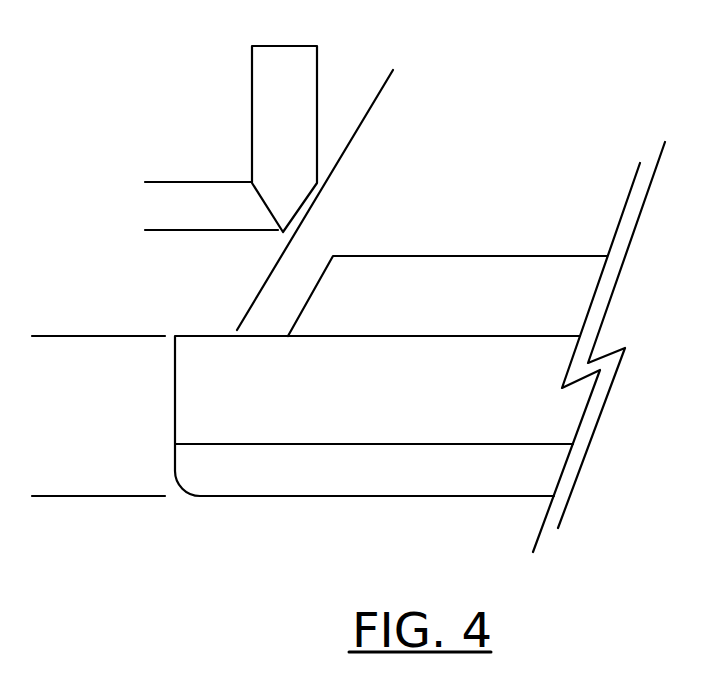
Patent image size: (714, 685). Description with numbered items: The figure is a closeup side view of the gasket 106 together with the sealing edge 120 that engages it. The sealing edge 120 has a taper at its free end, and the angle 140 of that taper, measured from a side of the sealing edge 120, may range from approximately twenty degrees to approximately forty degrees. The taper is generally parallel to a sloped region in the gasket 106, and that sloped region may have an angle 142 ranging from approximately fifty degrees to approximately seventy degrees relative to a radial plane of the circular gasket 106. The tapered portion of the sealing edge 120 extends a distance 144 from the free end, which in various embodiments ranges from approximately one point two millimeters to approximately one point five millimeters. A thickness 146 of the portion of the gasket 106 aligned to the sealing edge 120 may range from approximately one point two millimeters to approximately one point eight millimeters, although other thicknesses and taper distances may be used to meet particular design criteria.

The gasket 106 is at (250, 480).
The sealing edge 120 is at (252, 60).
The angle 140 is at (378, 92).
The angle 142 is at (322, 277).
The distance 144 is at (170, 130).
The thickness 146 is at (76, 336).